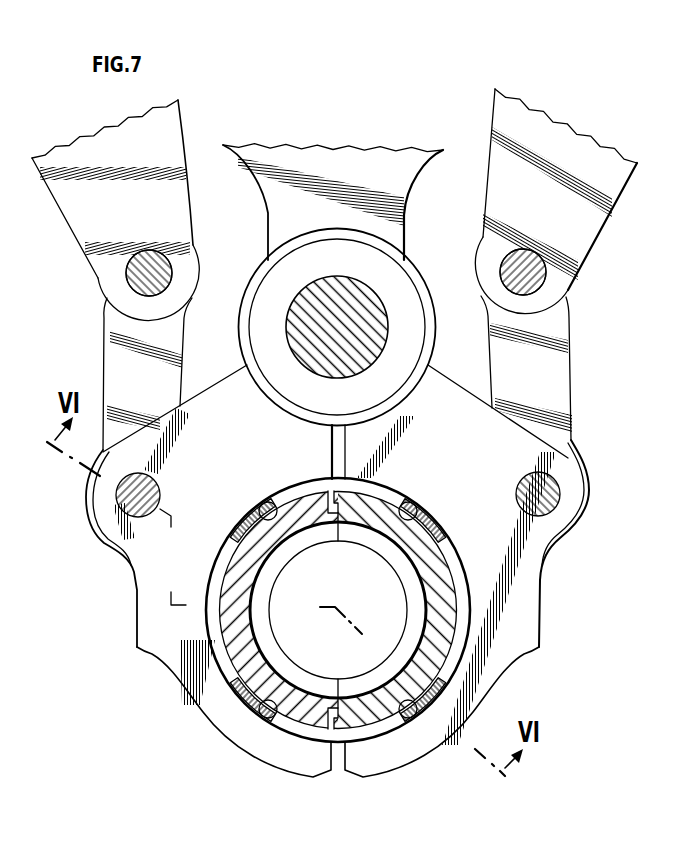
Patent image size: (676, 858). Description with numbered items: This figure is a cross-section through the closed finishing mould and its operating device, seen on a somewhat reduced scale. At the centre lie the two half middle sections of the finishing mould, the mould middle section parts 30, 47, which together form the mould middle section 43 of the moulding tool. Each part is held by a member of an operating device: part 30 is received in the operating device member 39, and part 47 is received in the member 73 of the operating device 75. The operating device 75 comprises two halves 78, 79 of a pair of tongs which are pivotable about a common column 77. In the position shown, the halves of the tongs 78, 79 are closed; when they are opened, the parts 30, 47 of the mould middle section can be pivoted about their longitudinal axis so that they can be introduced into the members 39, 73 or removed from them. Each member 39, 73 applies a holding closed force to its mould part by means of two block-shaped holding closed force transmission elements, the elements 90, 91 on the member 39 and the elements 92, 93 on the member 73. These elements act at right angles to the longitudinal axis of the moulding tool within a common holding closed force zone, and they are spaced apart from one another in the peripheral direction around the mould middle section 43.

The mould middle section part 30 is at (462, 642).
The operating device member 39 is at (396, 778).
The mould middle section 43 is at (203, 629).
The mould middle section part 47 is at (220, 656).
The operating device member 73 is at (251, 764).
The operating device 75 is at (575, 127).
The common column 77 is at (357, 313).
The tong half 78 is at (543, 572).
The tong half 79 is at (132, 578).
The holding closed force transmission element 90 is at (400, 709).
The holding closed force transmission element 91 is at (400, 507).
The holding closed force transmission element 92 is at (272, 505).
The holding closed force transmission element 93 is at (258, 690).